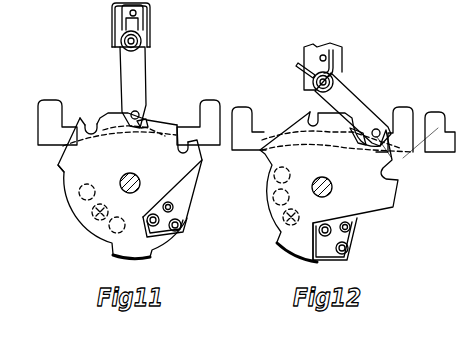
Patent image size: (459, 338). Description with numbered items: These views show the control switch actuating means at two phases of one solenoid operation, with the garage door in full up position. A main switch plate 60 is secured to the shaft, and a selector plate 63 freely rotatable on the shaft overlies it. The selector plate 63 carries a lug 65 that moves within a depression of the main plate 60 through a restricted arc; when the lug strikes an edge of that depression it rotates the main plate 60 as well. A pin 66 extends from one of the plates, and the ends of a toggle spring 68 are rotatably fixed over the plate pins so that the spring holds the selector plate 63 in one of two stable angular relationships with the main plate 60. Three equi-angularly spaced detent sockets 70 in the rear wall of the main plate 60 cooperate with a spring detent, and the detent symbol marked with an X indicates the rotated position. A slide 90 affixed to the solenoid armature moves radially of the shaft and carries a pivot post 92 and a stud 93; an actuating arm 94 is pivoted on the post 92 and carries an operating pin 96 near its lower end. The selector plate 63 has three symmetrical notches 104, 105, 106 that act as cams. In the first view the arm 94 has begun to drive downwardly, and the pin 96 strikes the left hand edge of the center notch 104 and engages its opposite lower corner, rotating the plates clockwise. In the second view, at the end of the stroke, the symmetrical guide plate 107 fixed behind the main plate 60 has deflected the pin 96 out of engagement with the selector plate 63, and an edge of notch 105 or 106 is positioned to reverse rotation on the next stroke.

In FIG. 11, the main switch plate 60 is at (186, 197).
In FIG. 12, the main switch plate 60 is at (365, 228).
In FIG. 11, the selector plate 63 is at (58, 169).
In FIG. 11, the lug 65 is at (155, 228).
In FIG. 12, the pin 66 is at (347, 252).
In FIG. 11, the toggle spring 68 is at (177, 209).
In FIG. 11, the detent sockets 70 is at (80, 200).
In FIG. 12, the detent sockets 70 is at (276, 227).
In FIG. 11, the slide 90 is at (150, 28).
In FIG. 12, the slide 90 is at (342, 60).
In FIG. 11, the pivot post 92 is at (121, 45).
In FIG. 11, the stud 93 is at (114, 12).
In FIG. 11, the actuating arm 94 is at (144, 63).
In FIG. 12, the actuating arm 94 is at (361, 100).
In FIG. 11, the operating pin 96 is at (140, 114).
In FIG. 11, the center notch 104 is at (147, 121).
In FIG. 11, the notch 105 is at (92, 131).
In FIG. 11, the notch 106 is at (183, 153).
In FIG. 11, the guide plate 107 is at (218, 106).
In FIG. 12, the guide plate 107 is at (417, 111).